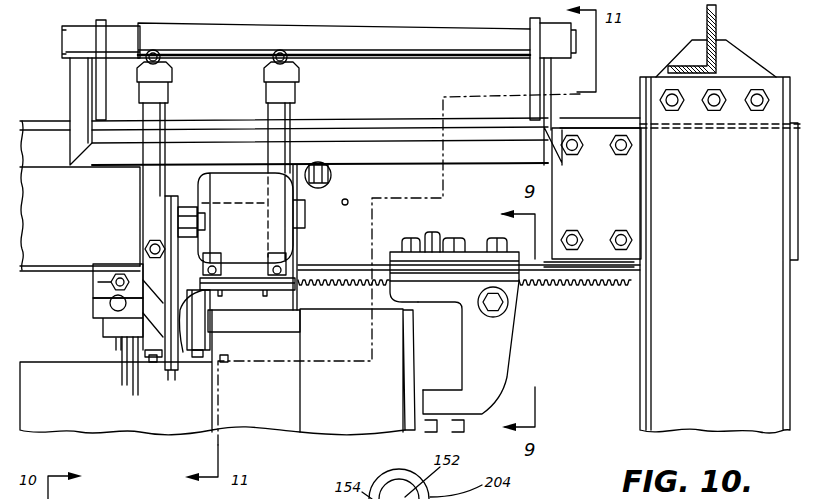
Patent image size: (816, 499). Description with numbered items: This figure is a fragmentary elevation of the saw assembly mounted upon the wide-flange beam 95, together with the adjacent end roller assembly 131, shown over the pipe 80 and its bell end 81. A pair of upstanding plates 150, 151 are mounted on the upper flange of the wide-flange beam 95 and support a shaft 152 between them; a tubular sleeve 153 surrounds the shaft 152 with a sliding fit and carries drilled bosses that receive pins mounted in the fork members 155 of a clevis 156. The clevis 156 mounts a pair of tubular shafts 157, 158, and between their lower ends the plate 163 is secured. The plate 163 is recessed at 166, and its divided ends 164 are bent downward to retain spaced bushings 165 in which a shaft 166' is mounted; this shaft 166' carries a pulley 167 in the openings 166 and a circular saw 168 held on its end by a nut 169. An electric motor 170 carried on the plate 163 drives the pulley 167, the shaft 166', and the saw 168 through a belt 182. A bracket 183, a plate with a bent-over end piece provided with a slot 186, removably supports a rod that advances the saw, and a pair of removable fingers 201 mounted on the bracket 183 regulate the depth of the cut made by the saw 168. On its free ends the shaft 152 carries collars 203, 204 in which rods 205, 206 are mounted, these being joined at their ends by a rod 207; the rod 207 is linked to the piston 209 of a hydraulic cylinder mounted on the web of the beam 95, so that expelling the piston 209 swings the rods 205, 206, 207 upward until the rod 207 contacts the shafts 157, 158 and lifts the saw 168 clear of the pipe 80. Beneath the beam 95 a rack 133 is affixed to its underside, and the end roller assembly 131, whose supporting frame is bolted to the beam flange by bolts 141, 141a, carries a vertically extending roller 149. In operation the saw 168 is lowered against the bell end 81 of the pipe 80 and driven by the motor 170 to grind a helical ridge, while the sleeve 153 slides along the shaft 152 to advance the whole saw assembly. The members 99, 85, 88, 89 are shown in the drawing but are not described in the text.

The collar 203 is at (75, 41).
The upstanding plate 151 is at (100, 37).
The rod 205 is at (80, 96).
The shaft 152 is at (424, 40).
The tubular sleeve 153 is at (334, 45).
The upstanding plate 150 is at (530, 27).
The collar 204 is at (525, 55).
The rod 207 is at (393, 150).
The rod 206 is at (556, 113).
The fork member 155 is at (160, 52).
The clevis 156 is at (172, 82).
The tubular shaft 158 is at (157, 140).
The tubular shaft 157 is at (287, 118).
The piston 209 is at (330, 172).
The housing 99 is at (80, 195).
The wide-flange beam 95 is at (48, 278).
The electric motor 170 is at (241, 224).
The belt 182 is at (172, 236).
The recess 166 is at (247, 278).
The plate 163 is at (250, 295).
The divided end 164 is at (213, 330).
The shaft 166' is at (220, 343).
The pulley 167 is at (175, 365).
The bushing 165 is at (152, 362).
The slot 186 is at (98, 284).
The bracket 183 is at (90, 318).
The nut 169 is at (117, 346).
The removable finger 201 is at (122, 382).
The circular saw 168 is at (132, 395).
The pipe 80 is at (31, 374).
The bell end 81 is at (361, 412).
The bolt 141 is at (415, 240).
The clamp bolt 141a is at (436, 238).
The rack 133 is at (603, 272).
The end roller assembly 131 is at (522, 337).
The roller 149 is at (455, 357).
The column 85 is at (665, 388).
The top plate 88 is at (746, 63).
The angle bracket 89 is at (716, 18).